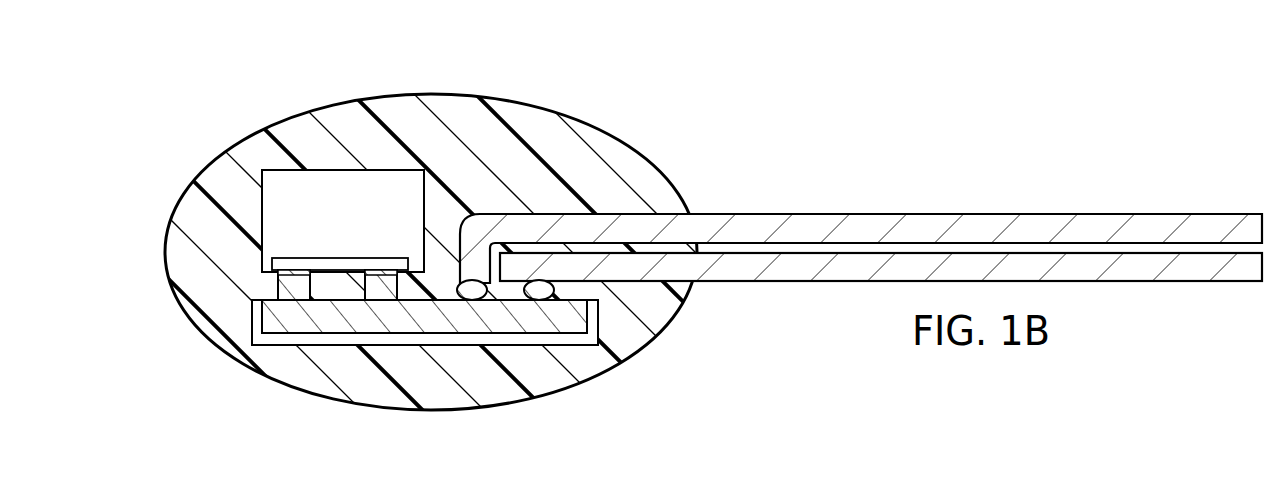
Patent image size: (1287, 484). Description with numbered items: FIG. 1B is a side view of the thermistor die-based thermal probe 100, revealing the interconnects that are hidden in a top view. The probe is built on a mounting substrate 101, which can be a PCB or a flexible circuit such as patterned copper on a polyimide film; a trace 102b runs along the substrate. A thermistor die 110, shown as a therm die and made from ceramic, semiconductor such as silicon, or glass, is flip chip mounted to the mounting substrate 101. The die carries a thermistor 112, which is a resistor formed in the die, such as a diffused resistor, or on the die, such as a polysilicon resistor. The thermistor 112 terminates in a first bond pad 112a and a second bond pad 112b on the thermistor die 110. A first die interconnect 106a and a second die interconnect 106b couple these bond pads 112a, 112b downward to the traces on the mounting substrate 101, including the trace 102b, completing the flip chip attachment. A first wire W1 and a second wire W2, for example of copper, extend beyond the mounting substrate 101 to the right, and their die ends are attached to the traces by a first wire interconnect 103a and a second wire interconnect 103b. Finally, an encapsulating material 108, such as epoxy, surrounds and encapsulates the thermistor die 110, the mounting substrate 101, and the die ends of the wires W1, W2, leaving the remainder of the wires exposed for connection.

The thermistor die-based thermal probe 100 is at (631, 249).
The mounting substrate 101 is at (379, 376).
The second trace 102b is at (304, 328).
The first wire interconnect 103a is at (546, 299).
The second wire interconnect 103b is at (480, 299).
The first die interconnect 106a is at (278, 282).
The second die interconnect 106b is at (375, 300).
The encapsulating material 108 is at (523, 112).
The thermistor die 110 is at (283, 180).
The thermistor 112 is at (281, 255).
The first bond pad 112a is at (297, 270).
The second bond pad 112b is at (387, 270).
The first wire W1 is at (1130, 282).
The second wire W2 is at (1105, 214).